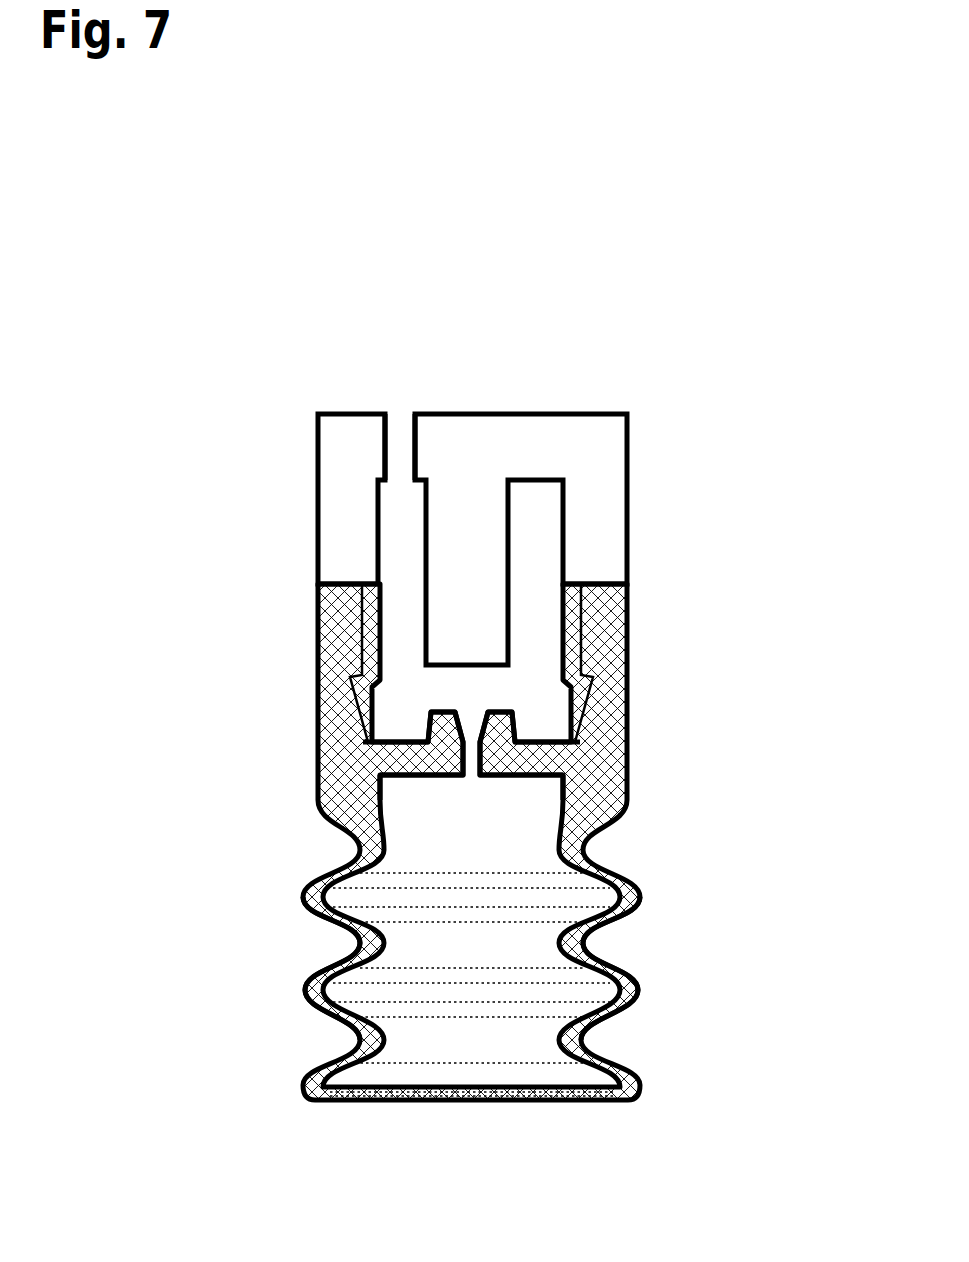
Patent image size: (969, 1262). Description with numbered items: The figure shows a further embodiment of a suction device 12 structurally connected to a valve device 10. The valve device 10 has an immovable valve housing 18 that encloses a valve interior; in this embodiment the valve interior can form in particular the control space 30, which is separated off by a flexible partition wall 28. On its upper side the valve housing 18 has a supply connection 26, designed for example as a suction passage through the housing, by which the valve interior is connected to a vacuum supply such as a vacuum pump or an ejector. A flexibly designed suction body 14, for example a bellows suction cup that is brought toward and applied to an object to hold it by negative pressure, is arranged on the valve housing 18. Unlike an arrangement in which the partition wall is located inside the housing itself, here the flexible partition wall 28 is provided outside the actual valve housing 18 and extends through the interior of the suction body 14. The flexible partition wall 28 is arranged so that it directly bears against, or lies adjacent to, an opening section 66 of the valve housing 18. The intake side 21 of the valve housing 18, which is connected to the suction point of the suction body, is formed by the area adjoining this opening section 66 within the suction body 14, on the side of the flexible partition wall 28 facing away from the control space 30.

The valve device 10 is at (702, 558).
The suction device 12 is at (275, 957).
The suction body 14 is at (615, 966).
The valve housing 18 is at (315, 522).
The intake side 21 is at (482, 792).
The supply connection 26 is at (402, 420).
The flexible partition wall 28 is at (415, 756).
The control space 30 is at (533, 503).
The opening section 66 is at (378, 633).